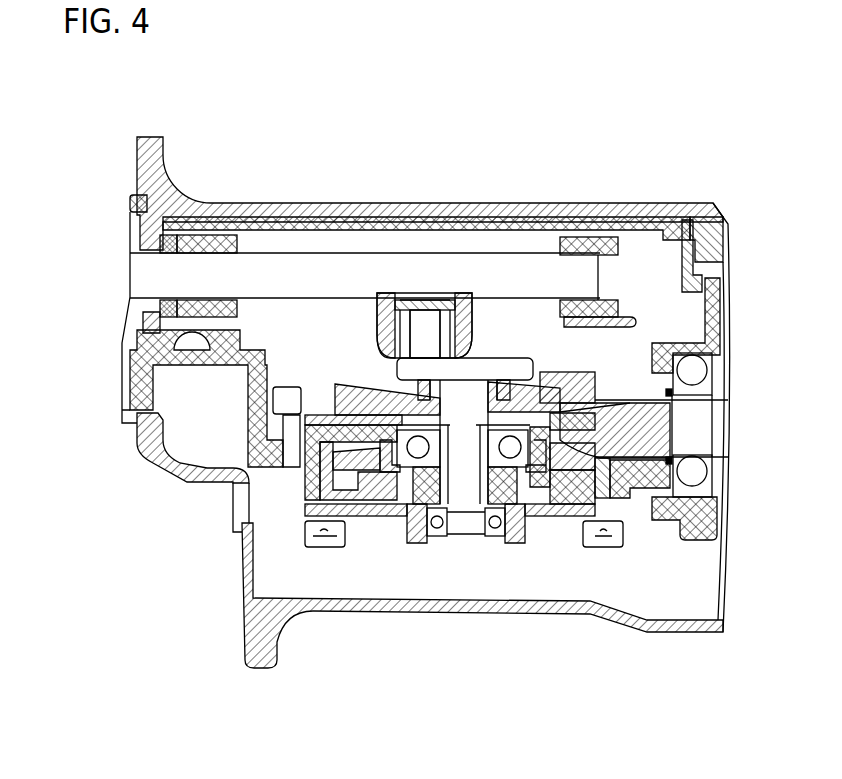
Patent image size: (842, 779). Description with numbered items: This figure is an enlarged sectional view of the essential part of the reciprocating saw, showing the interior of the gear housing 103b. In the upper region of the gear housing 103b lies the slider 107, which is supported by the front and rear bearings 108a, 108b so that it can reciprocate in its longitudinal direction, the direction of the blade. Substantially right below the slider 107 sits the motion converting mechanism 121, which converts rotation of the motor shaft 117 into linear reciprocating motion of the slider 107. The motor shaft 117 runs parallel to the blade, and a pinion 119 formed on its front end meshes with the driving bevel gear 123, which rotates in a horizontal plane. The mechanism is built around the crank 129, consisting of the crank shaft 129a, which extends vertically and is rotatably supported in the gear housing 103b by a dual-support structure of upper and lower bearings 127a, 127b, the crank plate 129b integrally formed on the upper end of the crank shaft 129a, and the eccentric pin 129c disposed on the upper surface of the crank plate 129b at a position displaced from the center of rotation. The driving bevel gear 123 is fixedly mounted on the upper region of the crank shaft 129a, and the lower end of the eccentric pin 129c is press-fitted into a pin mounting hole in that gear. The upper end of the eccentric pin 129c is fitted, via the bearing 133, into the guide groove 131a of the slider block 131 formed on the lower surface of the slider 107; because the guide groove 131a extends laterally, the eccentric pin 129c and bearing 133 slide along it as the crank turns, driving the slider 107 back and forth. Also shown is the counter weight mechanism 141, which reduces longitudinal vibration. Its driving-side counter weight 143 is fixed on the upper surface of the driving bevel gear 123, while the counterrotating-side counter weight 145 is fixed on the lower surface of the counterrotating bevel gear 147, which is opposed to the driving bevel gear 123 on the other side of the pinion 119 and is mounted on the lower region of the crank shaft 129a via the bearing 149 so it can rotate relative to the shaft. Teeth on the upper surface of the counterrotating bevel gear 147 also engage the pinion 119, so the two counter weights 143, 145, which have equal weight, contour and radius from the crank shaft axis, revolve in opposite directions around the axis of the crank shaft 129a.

The gear housing 103b is at (125, 190).
The slider 107 is at (284, 260).
The front bearing 108a is at (207, 318).
The rear bearing 108b is at (590, 242).
The motor shaft 117 is at (688, 440).
The pinion 119 is at (610, 402).
The motion converting mechanism 121 is at (478, 345).
The driving bevel gear 123 is at (337, 385).
The upper bearing 127a is at (417, 450).
The lower bearing 127b is at (508, 458).
The crank 129 is at (525, 352).
The crank shaft 129a is at (466, 504).
The crank plate 129b is at (497, 367).
The eccentric pin 129c is at (422, 320).
The slider block 131 is at (383, 322).
The guide groove 131a is at (442, 303).
The bearing 133 is at (398, 335).
The counter weight mechanism 141 is at (537, 504).
The driving-side counter weight 143 is at (587, 375).
The counterrotating-side counter weight 145 is at (572, 500).
The counterrotating bevel gear 147 is at (372, 486).
The bearing 149 is at (443, 480).